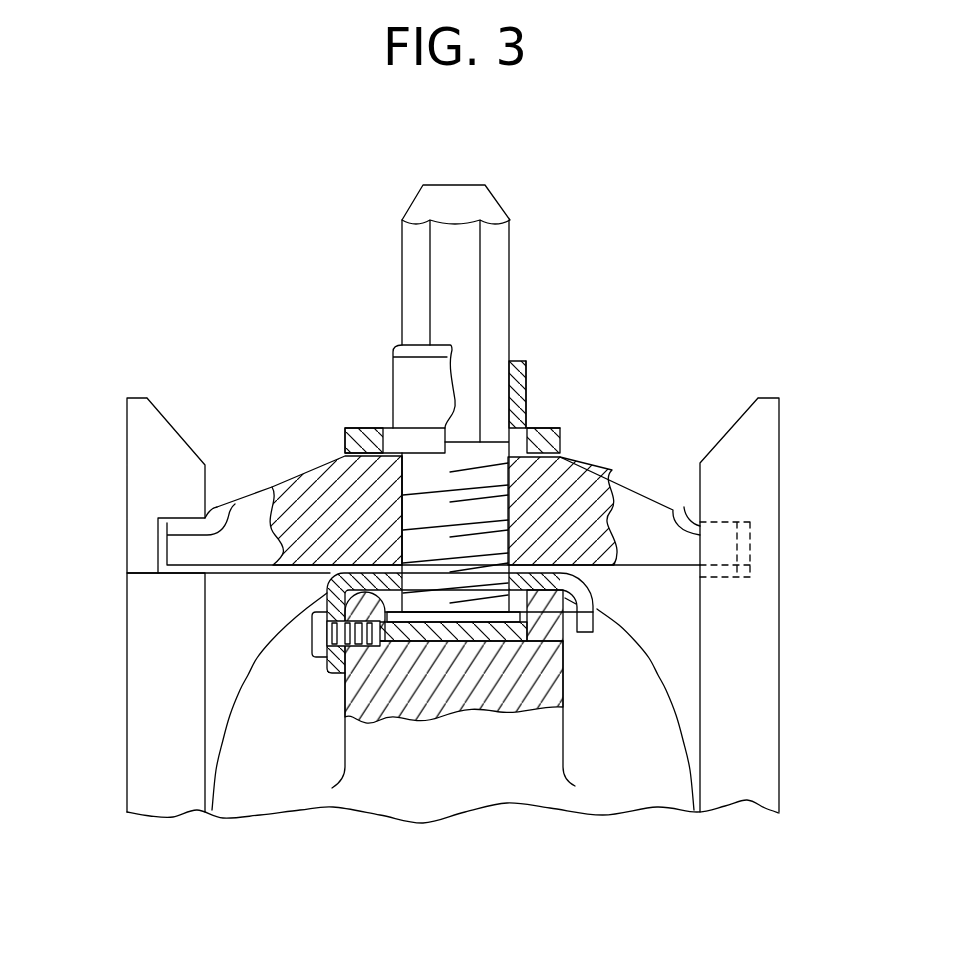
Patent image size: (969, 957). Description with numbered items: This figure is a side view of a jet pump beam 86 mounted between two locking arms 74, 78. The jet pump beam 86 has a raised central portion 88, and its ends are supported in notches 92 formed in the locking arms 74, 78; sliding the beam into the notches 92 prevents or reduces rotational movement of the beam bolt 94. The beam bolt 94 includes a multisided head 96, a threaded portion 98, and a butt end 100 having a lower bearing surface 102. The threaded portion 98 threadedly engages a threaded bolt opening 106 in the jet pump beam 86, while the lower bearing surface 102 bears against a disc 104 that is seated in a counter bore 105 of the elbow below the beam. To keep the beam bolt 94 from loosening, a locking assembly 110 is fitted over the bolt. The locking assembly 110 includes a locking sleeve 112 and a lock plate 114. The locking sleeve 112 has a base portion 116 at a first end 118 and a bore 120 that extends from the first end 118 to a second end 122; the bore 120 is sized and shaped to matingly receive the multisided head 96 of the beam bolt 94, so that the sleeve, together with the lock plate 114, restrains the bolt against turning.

The locking arm 74 is at (127, 738).
The locking arm 78 is at (747, 747).
The jet pump beam 86 is at (295, 456).
The raised central portion 88 is at (597, 465).
The notches 92 is at (158, 566).
The beam bolt 94 is at (502, 383).
The multisided head 96 is at (408, 262).
The threaded portion 98 is at (540, 498).
The butt end 100 is at (597, 610).
The lower bearing surface 102 is at (450, 612).
The disc 104 is at (460, 645).
The counter bore 105 is at (423, 643).
The threaded bolt opening 106 is at (410, 523).
The locking assembly 110 is at (564, 351).
The locking sleeve 112 is at (527, 368).
The lock plate 114 is at (563, 428).
The base portion 116 is at (390, 428).
The first end 118 is at (530, 425).
The bore 120 is at (523, 361).
The second end 122 is at (390, 342).